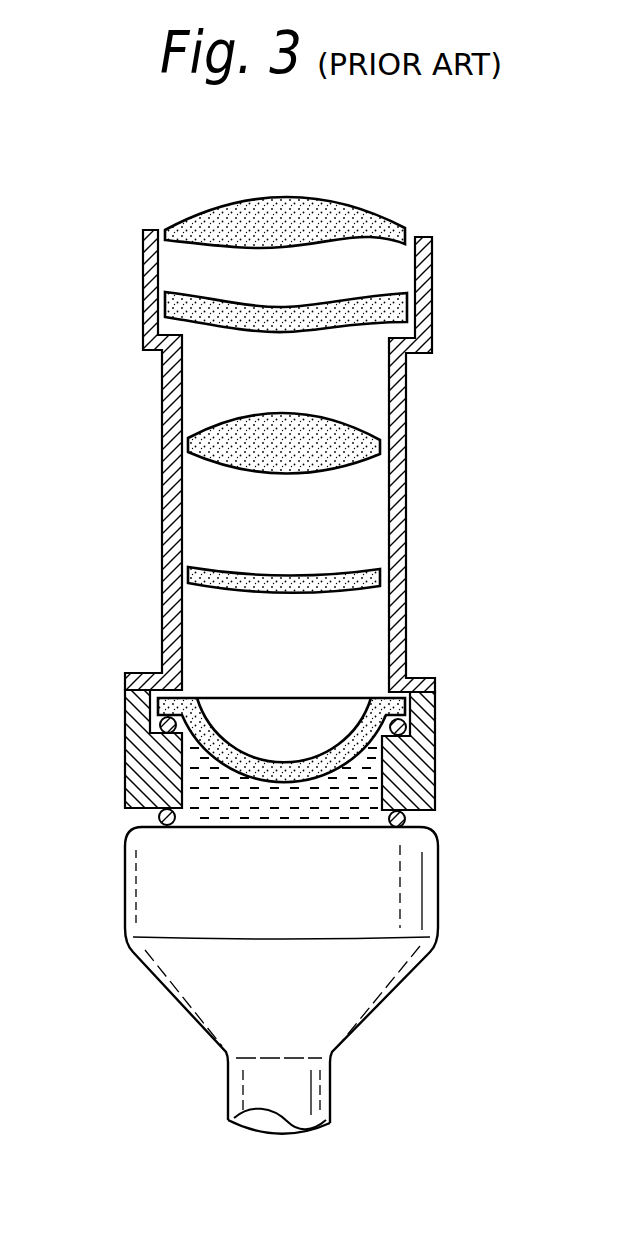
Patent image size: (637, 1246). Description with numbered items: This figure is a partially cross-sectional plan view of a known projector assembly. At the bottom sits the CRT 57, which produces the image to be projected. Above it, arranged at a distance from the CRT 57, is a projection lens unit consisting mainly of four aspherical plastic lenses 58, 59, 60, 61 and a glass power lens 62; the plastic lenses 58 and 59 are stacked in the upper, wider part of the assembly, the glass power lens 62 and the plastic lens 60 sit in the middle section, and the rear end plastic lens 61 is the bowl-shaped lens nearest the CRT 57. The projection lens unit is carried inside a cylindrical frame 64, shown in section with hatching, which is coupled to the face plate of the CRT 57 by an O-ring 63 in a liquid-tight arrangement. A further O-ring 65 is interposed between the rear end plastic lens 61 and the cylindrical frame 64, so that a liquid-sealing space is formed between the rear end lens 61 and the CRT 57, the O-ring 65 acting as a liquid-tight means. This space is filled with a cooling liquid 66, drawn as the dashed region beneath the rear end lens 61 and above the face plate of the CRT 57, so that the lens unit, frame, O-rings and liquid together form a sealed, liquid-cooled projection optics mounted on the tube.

The CRT 57 is at (427, 920).
The aspherical plastic lens 58 is at (378, 217).
The aspherical plastic lens 59 is at (405, 305).
The aspherical plastic lens 60 is at (363, 570).
The rear end plastic lens 61 is at (357, 712).
The glass power lens 62 is at (363, 435).
The O-ring 63 is at (405, 820).
The cylindrical frame 64 is at (435, 732).
The O-ring 65 is at (146, 715).
The cooling liquid 66 is at (368, 785).